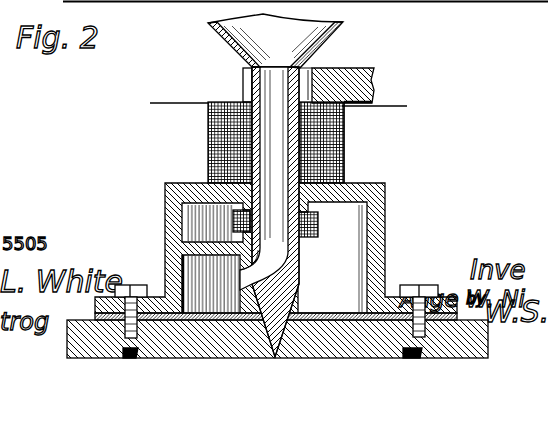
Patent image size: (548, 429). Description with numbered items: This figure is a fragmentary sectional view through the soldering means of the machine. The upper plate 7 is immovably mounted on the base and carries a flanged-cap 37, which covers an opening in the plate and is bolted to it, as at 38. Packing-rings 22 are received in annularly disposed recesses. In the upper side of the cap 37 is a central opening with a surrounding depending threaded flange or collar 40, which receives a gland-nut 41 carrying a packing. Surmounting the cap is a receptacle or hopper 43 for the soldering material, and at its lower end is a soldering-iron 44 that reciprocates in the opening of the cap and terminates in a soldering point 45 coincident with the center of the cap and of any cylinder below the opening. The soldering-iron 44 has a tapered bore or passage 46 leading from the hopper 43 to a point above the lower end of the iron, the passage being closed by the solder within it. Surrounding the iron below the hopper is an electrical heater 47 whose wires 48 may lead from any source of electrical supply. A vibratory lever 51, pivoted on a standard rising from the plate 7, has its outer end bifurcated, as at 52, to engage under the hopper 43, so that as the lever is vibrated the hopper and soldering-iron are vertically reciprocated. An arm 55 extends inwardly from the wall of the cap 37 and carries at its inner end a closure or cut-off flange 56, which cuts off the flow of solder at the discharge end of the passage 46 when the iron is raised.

The upper plate 7 is at (490, 347).
The packing-rings 22 is at (425, 350).
The flanged-cap 37 is at (385, 213).
The bolts 38 is at (131, 283).
The threaded flange or collar 40 is at (235, 222).
The gland-nut 41 is at (318, 230).
The receptacle or hopper 43 is at (343, 24).
The soldering-iron 44 is at (296, 128).
The soldering point 45 is at (283, 340).
The tapered bore or passage 46 is at (273, 143).
The electrical heater 47 is at (344, 165).
The wires 48 is at (293, 91).
The vibratory lever 51 is at (357, 71).
The bifurcated end 52 is at (243, 69).
The arm 55 is at (242, 272).
The flange 56 is at (211, 285).